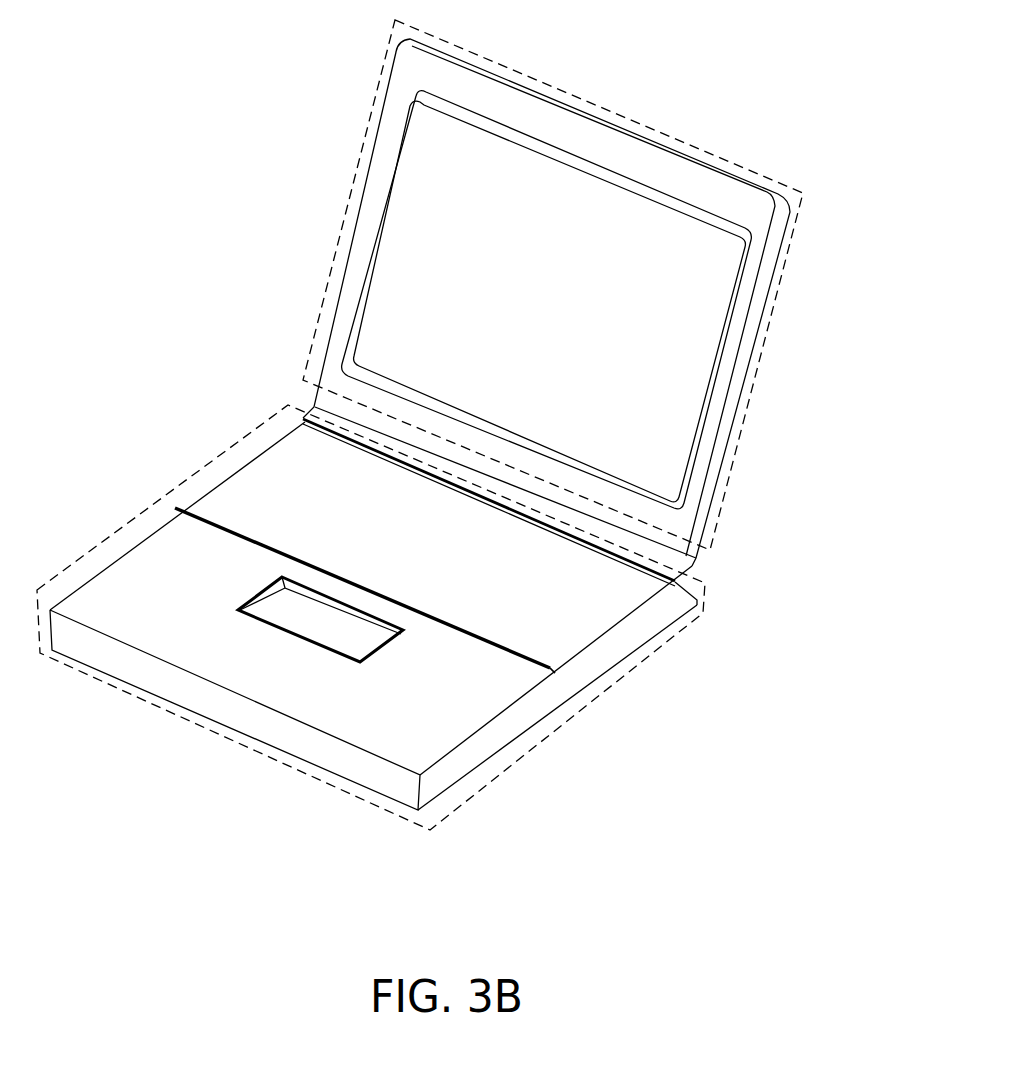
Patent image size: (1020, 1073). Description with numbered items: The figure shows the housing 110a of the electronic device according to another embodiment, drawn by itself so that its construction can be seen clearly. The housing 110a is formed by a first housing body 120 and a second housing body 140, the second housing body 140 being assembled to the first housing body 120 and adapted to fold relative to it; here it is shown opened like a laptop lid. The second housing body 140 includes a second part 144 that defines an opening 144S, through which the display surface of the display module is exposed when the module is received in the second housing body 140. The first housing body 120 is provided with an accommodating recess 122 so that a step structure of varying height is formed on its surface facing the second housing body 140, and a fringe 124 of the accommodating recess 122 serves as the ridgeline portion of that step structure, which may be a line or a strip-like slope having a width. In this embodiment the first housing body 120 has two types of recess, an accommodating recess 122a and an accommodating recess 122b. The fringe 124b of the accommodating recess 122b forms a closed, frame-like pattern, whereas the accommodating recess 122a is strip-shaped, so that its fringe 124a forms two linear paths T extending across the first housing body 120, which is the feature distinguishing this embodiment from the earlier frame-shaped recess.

The housing 110a is at (443, 459).
The first housing body 120 is at (422, 598).
The accommodating recess 122 is at (337, 520).
The accommodating recess 122a is at (306, 428).
The accommodating recess 122b is at (268, 596).
The fringe 124 is at (515, 728).
The fringe 124a is at (530, 653).
The fringe 124b is at (386, 644).
The second housing body 140 is at (576, 293).
The second part 144 is at (576, 302).
The opening 144S is at (697, 376).
The linear paths T is at (487, 629).